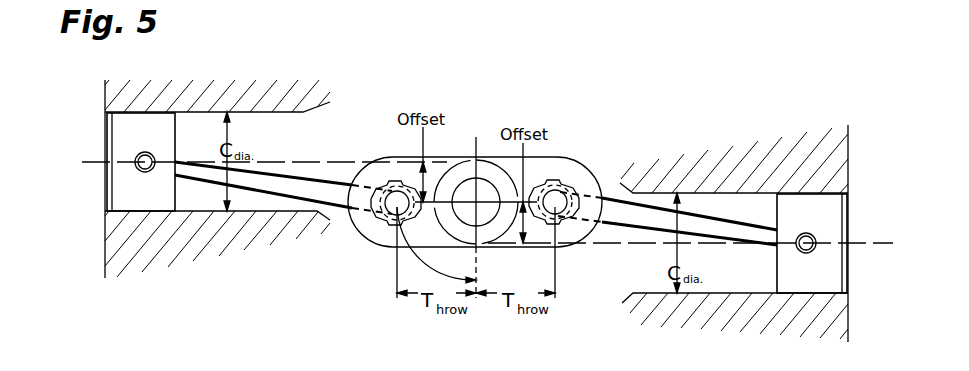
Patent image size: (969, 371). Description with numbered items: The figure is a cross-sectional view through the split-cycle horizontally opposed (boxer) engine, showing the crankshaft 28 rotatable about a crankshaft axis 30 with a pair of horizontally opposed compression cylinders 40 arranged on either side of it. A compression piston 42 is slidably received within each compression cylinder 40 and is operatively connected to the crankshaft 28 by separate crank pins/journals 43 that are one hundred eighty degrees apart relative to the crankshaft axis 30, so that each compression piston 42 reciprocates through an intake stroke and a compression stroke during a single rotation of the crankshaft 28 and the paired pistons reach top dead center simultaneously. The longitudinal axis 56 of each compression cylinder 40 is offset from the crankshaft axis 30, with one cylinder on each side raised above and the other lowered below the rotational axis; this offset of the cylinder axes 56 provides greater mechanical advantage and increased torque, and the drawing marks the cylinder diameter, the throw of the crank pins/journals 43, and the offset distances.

The crankshaft 28 is at (483, 178).
The crankshaft axis 30 is at (474, 200).
The compression cylinder 40 is at (305, 114).
The compression piston 42 is at (108, 176).
The crank pin/journal 43 is at (392, 193).
The longitudinal axis 56 is at (92, 158).